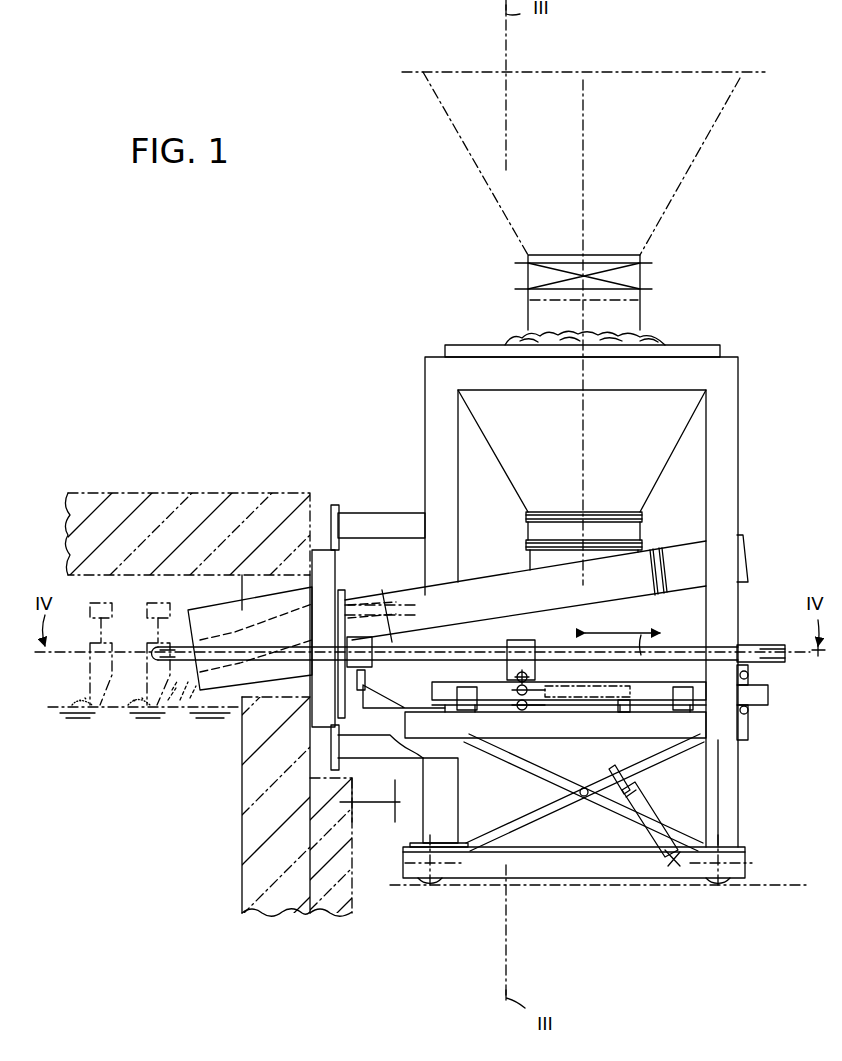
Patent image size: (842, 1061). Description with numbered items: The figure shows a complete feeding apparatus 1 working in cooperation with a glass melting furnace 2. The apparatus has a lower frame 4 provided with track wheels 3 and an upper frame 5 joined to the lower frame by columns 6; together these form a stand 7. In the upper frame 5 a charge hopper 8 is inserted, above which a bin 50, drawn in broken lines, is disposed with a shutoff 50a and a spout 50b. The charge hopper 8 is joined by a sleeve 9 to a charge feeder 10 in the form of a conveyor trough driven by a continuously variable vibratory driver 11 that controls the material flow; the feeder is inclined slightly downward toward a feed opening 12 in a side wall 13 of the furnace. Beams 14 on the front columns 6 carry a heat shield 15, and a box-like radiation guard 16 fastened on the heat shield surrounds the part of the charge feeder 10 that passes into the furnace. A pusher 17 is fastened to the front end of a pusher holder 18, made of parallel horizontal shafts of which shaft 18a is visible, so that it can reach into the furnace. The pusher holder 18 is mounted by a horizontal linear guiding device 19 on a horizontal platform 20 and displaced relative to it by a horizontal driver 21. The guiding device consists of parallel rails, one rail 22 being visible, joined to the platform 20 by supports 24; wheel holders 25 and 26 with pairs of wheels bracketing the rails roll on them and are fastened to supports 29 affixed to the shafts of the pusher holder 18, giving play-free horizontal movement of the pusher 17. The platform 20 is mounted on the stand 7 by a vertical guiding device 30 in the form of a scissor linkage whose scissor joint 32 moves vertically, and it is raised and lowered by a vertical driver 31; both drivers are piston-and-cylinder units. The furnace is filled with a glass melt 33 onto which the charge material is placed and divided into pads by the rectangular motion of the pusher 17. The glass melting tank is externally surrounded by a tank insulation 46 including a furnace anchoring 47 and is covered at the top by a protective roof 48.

The feeding apparatus 1 is at (433, 325).
The glass melting furnace 2 is at (88, 460).
The track wheels 3 is at (425, 887).
The lower frame 4 is at (636, 870).
The upper frame 5 is at (485, 380).
The columns 6 is at (437, 409).
The stand 7 is at (583, 590).
The charge hopper 8 is at (640, 457).
The sleeve 9 is at (535, 532).
The charge feeder 10 is at (505, 600).
The vibratory driver 11 is at (683, 560).
The feed opening 12 is at (265, 580).
The side wall 13 is at (265, 895).
The beams 14 is at (378, 527).
The heat shield 15 is at (335, 565).
The radiation guard 16 is at (208, 605).
The pusher 17 is at (155, 690).
The pusher holder 18 is at (684, 643).
The shaft 18a is at (627, 629).
The horizontal linear guiding device 19 is at (769, 669).
The horizontal platform 20 is at (584, 792).
The horizontal driver 21 is at (585, 690).
The rail 22 is at (760, 700).
The supports 24 is at (465, 702).
The wheel holder 25 is at (540, 680).
The wheel holder 26 is at (746, 667).
The supports 29 is at (520, 650).
The vertical guiding device 30 is at (573, 839).
The vertical driver 31 is at (650, 800).
The scissor joint 32 is at (585, 796).
The glass melt 33 is at (122, 866).
The tank insulation 46 is at (335, 905).
The furnace anchoring 47 is at (378, 805).
The protective roof 48 is at (135, 505).
The bin 50 is at (690, 140).
The shutoff 50a is at (637, 270).
The spout 50b is at (627, 310).